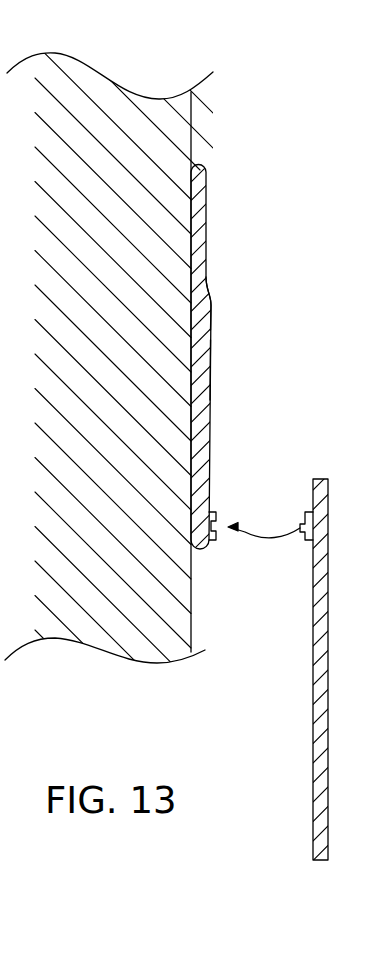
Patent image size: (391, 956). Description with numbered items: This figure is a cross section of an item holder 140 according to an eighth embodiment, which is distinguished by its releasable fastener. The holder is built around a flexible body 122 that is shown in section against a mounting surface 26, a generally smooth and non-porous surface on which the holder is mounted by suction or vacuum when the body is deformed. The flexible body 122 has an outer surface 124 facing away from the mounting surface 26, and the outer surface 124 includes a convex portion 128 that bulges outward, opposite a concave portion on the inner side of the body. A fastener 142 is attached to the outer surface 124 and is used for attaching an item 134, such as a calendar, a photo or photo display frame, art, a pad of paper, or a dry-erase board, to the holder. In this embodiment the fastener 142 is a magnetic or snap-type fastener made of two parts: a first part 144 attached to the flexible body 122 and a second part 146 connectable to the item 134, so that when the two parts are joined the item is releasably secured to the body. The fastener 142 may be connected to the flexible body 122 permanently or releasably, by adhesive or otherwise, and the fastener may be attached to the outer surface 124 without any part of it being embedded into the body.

The mounting surface 26 is at (208, 115).
The flexible body 122 is at (207, 203).
The outer surface 124 is at (213, 372).
The convex portion 128 is at (211, 322).
The item 134 is at (328, 820).
The item holder 140 is at (253, 257).
The fastener 142 is at (297, 462).
The first part 144 is at (212, 512).
The second part 146 is at (307, 512).